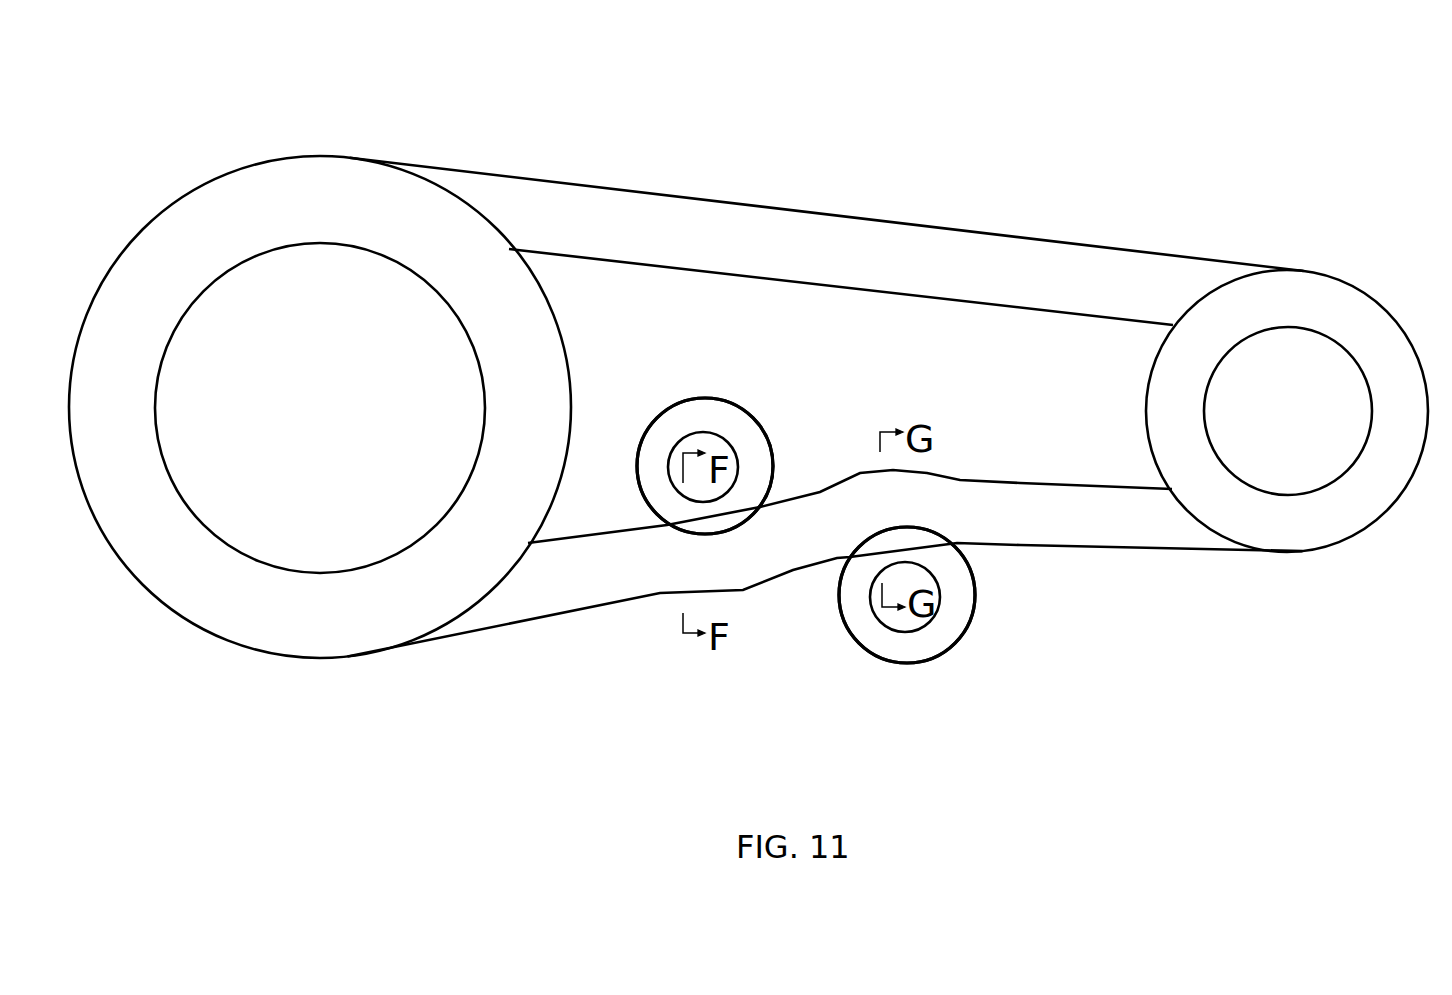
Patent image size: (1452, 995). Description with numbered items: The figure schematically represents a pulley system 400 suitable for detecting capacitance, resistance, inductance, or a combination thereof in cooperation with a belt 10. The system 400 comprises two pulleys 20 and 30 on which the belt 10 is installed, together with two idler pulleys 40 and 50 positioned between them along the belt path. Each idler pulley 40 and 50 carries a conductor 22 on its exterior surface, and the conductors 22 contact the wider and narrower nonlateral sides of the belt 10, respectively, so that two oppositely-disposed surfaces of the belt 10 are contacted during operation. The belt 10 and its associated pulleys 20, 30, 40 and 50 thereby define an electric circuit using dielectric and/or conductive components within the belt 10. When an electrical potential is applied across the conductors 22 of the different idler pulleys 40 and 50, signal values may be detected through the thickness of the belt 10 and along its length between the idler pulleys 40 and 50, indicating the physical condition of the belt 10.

The pulley system 400 is at (1124, 145).
The belt 10 is at (875, 247).
The pulley 20 is at (227, 218).
The pulley 30 is at (1373, 340).
The conductor 22 is at (767, 430).
The idler pulley 40 is at (872, 628).
The idler pulley 50 is at (698, 415).